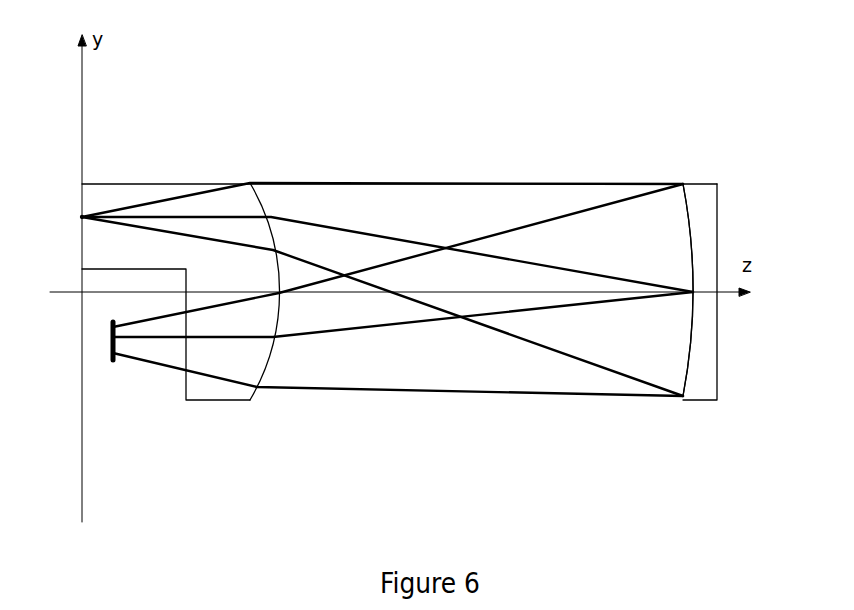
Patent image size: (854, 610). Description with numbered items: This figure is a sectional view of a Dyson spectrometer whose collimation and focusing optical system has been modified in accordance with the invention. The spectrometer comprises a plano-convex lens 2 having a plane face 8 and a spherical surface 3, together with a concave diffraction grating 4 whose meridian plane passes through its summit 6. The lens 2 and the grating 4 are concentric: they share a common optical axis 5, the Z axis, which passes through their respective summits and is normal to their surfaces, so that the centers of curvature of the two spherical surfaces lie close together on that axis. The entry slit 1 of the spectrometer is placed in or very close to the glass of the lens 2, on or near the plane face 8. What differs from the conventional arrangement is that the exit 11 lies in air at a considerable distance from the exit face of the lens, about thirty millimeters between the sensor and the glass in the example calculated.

The entry slit 1 is at (80, 193).
The plano-convex lens 2 is at (128, 183).
The spherical surface 3 is at (262, 197).
The concave diffraction grating 4 is at (684, 215).
The optical axis 5 is at (727, 300).
The summit 6 is at (690, 305).
The plane face 8 is at (82, 253).
The exit 11 is at (113, 363).